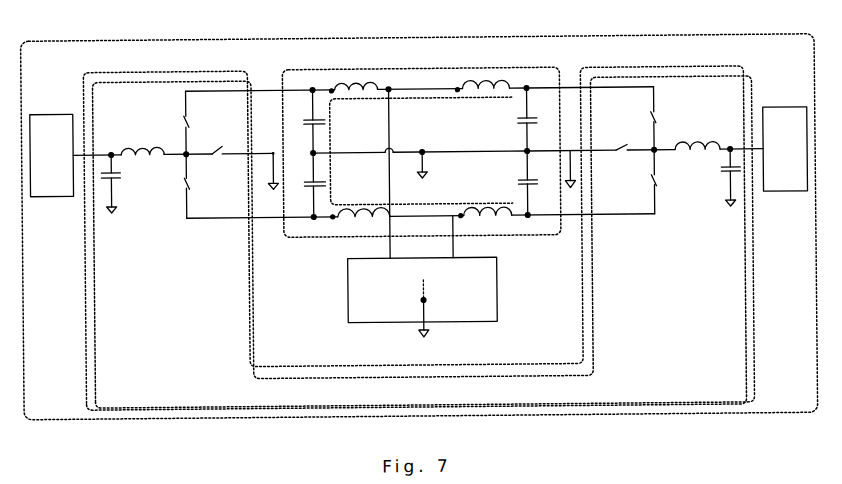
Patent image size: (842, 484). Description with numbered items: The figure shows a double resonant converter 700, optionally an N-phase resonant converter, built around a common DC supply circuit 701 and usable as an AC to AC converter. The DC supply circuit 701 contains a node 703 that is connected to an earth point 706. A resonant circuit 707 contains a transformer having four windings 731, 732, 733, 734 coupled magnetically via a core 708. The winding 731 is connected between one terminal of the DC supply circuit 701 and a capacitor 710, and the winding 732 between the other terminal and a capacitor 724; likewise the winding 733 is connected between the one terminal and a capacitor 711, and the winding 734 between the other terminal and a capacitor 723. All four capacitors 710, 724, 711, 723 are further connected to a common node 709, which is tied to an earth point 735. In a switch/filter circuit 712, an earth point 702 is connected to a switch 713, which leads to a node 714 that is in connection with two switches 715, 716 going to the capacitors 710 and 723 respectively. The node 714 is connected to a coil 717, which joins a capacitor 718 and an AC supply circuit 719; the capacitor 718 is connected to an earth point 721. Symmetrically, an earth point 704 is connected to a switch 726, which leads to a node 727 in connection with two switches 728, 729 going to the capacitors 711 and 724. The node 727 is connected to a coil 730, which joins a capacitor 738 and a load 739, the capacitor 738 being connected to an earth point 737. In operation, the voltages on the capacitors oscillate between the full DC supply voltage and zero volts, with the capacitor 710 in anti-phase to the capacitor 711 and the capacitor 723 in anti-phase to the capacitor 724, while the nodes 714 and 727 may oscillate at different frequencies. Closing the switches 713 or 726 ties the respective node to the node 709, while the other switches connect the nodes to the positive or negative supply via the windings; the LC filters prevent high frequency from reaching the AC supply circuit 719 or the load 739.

The double resonant converter 700 is at (417, 28).
The switch/filter circuit 712 is at (165, 70).
The resonant circuit 707 is at (410, 68).
The DC supply circuit 701 is at (348, 277).
The node 703 is at (421, 299).
The earth point 706 is at (428, 338).
The AC supply circuit 719 is at (48, 111).
The load 739 is at (781, 104).
The coil 717 is at (146, 148).
The capacitor 718 is at (122, 174).
The earth point 721 is at (117, 209).
The switch 713 is at (228, 140).
The node 714 is at (188, 154).
The switch 715 is at (186, 119).
The switch 716 is at (186, 181).
The earth point 702 is at (270, 190).
The capacitor 723 is at (306, 182).
The capacitor 710 is at (308, 121).
The core 708 is at (332, 184).
The node 709 is at (424, 150).
The earth point 735 is at (428, 178).
The winding 731 is at (350, 86).
The winding 733 is at (484, 88).
The winding 734 is at (358, 216).
The winding 732 is at (488, 218).
The capacitor 711 is at (531, 120).
The capacitor 724 is at (537, 184).
The earth point 704 is at (577, 191).
The switch 726 is at (625, 149).
The node 727 is at (652, 154).
The switch 728 is at (656, 121).
The switch 729 is at (656, 182).
The coil 730 is at (699, 147).
The capacitor 738 is at (722, 174).
The earth point 737 is at (728, 205).